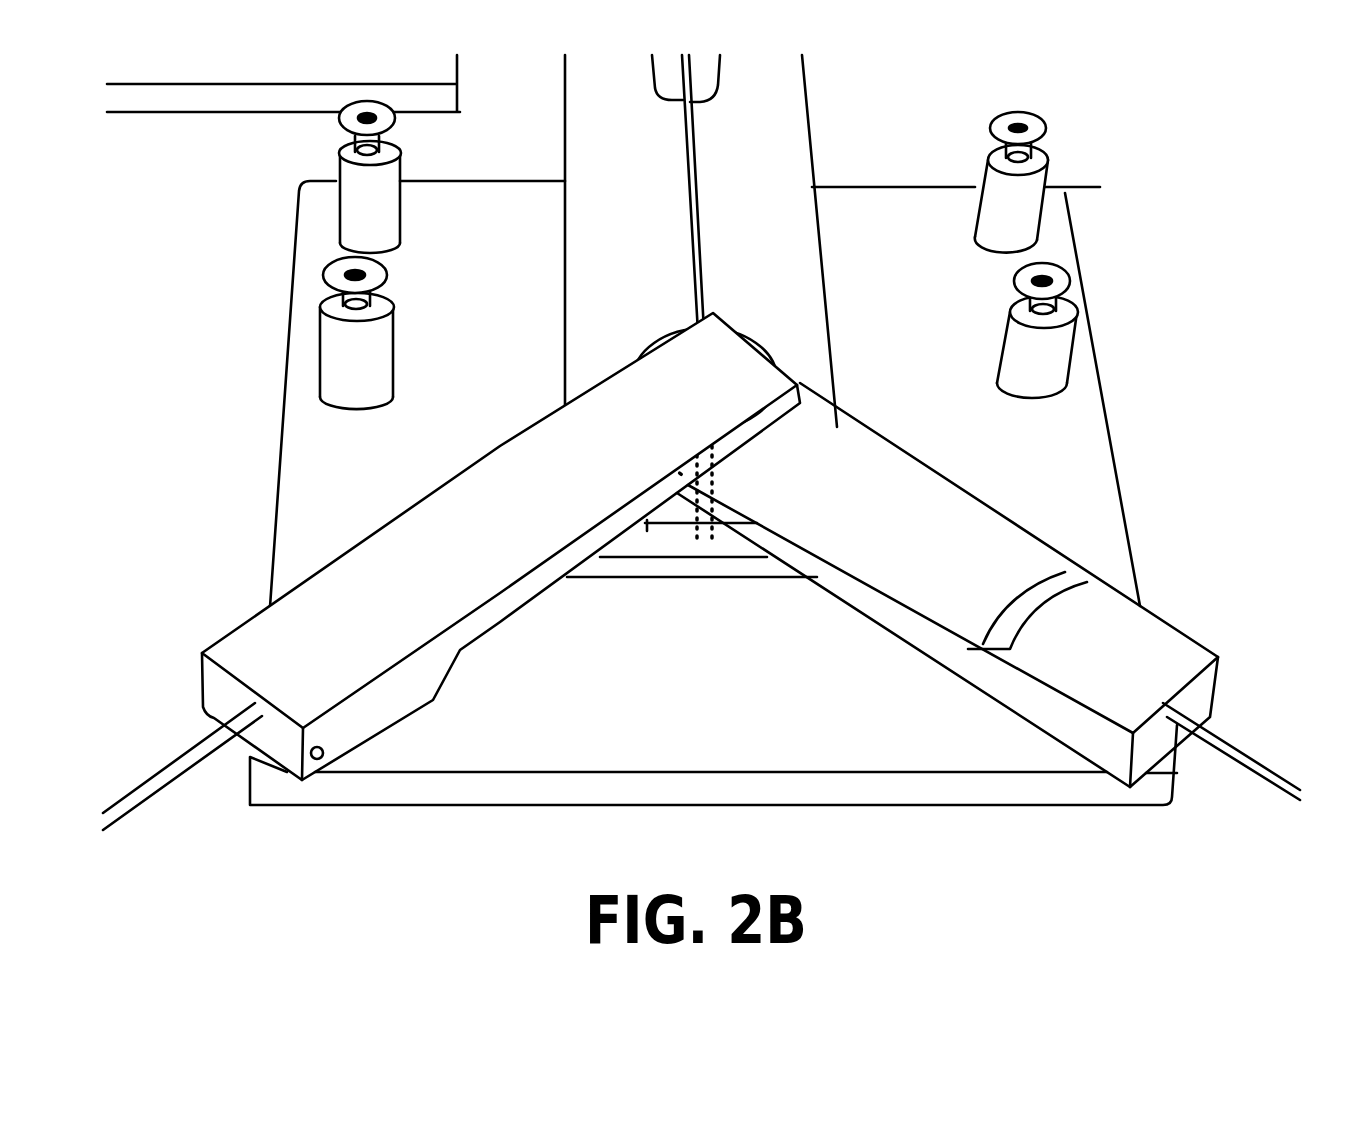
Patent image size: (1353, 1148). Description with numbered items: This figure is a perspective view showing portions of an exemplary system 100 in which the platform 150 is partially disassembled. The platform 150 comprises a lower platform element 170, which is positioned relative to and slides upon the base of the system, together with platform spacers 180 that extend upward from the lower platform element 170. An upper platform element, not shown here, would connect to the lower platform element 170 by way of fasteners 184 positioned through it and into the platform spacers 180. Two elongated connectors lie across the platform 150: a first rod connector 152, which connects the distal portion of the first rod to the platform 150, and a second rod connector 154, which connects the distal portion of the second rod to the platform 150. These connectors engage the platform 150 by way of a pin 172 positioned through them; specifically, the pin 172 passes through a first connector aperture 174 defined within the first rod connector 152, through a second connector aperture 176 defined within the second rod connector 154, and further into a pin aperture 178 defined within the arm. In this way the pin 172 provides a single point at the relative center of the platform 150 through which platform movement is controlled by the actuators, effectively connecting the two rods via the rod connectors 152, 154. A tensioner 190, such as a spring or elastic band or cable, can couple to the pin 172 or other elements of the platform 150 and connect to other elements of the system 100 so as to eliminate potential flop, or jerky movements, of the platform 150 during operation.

The system 100 is at (238, 447).
The platform 150 is at (263, 337).
The first rod connector 152 is at (485, 578).
The second rod connector 154 is at (895, 576).
The lower platform element 170 is at (672, 731).
The pin 172 is at (713, 348).
The first connector aperture 174 is at (766, 380).
The second connector aperture 176 is at (725, 435).
The pin aperture 178 is at (705, 480).
The platform spacers 180 is at (1100, 187).
The fasteners 184 is at (1070, 290).
The tensioner 190 is at (692, 140).